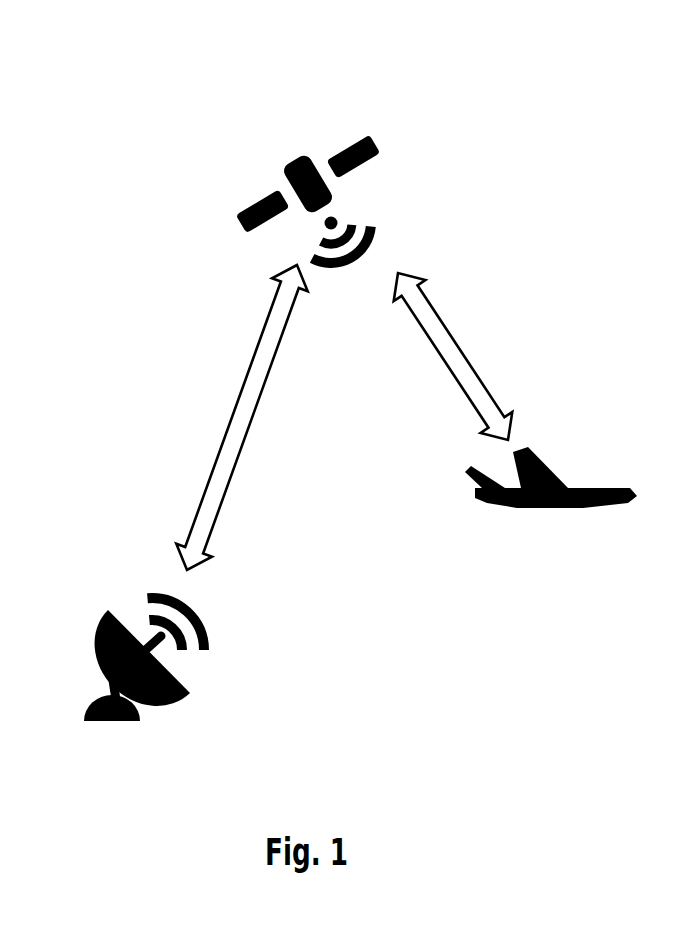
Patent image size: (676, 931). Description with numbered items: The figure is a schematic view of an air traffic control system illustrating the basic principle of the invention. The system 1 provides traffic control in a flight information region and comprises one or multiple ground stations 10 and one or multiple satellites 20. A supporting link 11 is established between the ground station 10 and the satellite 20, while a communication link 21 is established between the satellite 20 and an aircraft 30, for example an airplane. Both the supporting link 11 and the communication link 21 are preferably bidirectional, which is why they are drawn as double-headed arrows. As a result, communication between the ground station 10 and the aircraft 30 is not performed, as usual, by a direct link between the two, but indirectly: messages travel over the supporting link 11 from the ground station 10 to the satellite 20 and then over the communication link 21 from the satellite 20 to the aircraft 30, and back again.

The system 1 is at (627, 135).
The ground station 10 is at (104, 620).
The supporting link 11 is at (230, 412).
The satellite 20 is at (263, 200).
The communication link 21 is at (460, 342).
The aircraft 30 is at (546, 470).